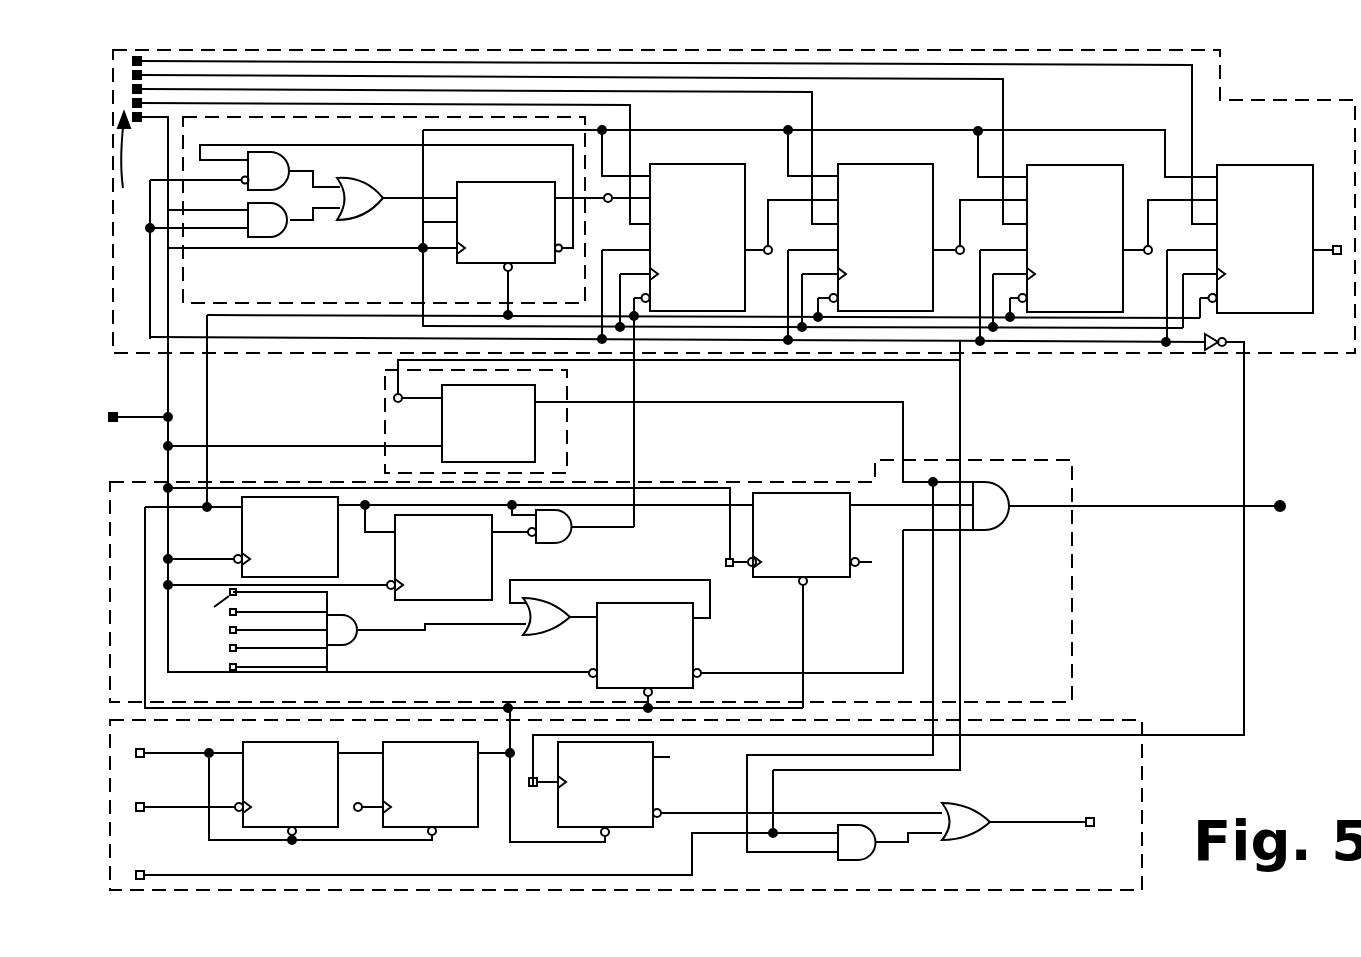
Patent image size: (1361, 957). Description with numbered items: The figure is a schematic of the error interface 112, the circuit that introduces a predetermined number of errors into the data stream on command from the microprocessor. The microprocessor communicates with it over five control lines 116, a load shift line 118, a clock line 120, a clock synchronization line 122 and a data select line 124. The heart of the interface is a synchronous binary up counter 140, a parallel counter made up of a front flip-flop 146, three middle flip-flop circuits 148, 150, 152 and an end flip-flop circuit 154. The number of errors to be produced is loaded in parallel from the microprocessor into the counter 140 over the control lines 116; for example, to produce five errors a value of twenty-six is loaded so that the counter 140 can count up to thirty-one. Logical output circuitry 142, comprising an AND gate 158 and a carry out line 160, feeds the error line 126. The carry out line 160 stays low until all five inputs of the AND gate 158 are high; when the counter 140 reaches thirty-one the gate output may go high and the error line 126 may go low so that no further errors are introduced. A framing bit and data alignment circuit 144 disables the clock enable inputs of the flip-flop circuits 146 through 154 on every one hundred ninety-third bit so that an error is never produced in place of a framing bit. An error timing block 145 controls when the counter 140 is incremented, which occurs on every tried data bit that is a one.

The error interface 112 is at (1245, 91).
The control lines 116 is at (138, 166).
The load shift line 118 is at (157, 753).
The clock line 120 is at (133, 394).
The clock synchronization line 122 is at (167, 805).
The data select line 124 is at (168, 859).
The error line 126 is at (1100, 513).
The synchronous binary up counter 140 is at (1297, 355).
The logical output circuitry 142 is at (1082, 621).
The framing bit and data alignment circuit 144 is at (1155, 762).
The error timing block 145 is at (567, 380).
The front flip-flop 146 is at (165, 126).
The middle flip-flop circuit 148 is at (703, 164).
The middle flip-flop circuit 150 is at (948, 188).
The middle flip-flop circuit 152 is at (1138, 190).
The end flip-flop circuit 154 is at (1331, 188).
The AND gate 158 is at (426, 615).
The carry out line 160 is at (450, 642).